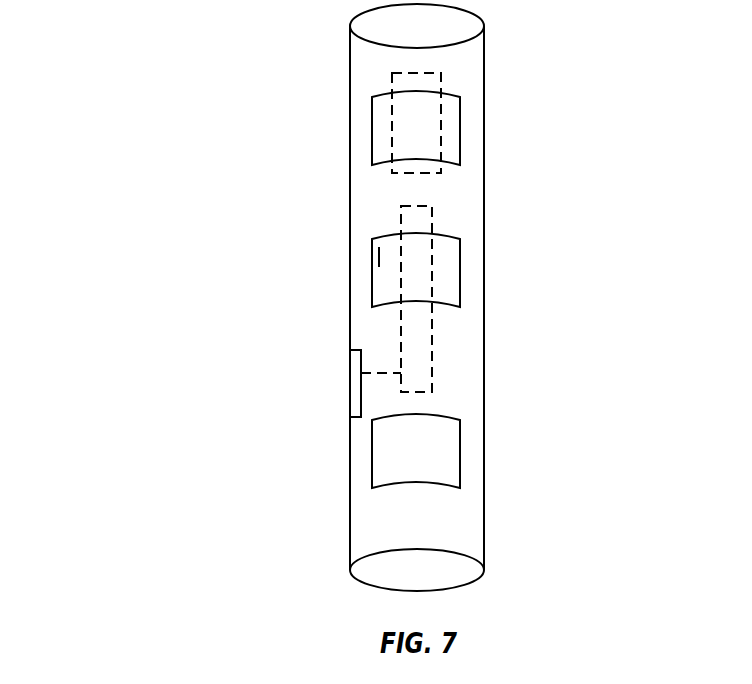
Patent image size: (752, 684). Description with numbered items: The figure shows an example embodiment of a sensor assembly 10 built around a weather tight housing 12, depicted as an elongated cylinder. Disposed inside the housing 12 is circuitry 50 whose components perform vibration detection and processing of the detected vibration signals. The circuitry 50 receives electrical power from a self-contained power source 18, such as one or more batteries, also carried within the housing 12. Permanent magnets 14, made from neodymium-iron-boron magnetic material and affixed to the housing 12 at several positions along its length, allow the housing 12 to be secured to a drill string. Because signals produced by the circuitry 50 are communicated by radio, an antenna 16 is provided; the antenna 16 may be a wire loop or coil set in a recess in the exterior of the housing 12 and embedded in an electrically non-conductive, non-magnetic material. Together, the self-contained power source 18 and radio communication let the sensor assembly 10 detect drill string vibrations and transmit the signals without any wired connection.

The sensor assembly 10 is at (562, 60).
The housing 12 is at (350, 118).
The permanent magnets 14 is at (380, 133).
The antenna 16 is at (378, 255).
The power source 18 is at (412, 86).
The circuitry 50 is at (420, 351).